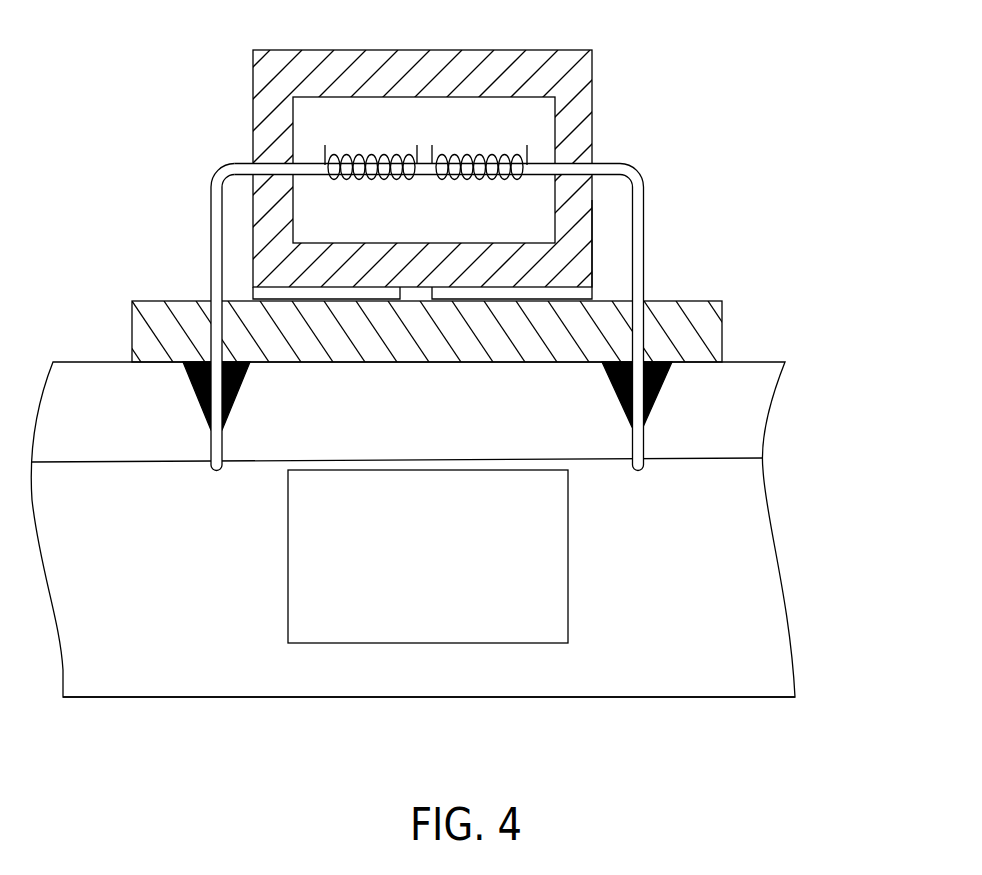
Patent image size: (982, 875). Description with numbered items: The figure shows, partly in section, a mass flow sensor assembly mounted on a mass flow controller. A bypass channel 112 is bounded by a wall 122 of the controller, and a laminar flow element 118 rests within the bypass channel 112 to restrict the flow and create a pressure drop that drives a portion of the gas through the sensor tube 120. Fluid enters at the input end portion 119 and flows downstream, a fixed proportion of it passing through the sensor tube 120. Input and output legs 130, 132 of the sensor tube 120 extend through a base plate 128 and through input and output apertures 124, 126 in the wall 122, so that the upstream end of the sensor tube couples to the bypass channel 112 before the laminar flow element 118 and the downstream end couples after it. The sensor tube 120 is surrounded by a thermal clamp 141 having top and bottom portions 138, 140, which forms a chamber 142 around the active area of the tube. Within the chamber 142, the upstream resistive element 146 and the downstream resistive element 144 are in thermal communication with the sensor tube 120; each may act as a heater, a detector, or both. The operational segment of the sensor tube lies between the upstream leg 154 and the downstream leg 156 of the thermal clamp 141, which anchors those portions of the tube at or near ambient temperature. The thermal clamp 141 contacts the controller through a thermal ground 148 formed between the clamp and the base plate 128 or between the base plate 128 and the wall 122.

The bypass channel 112 is at (722, 557).
The laminar flow element 118 is at (447, 569).
The input end portion 119 is at (153, 512).
The sensor tube 120 is at (426, 90).
The wall 122 is at (760, 378).
The input aperture 124 is at (633, 463).
The output aperture 126 is at (210, 464).
The base plate 128 is at (714, 303).
The input leg 130 is at (430, 287).
The output leg 132 is at (211, 231).
The top portion 138 is at (527, 66).
The bottom portion 140 is at (588, 259).
The thermal clamp 141 is at (610, 192).
The chamber 142 is at (402, 120).
The downstream resistive element 144 is at (357, 162).
The upstream resistive element 146 is at (482, 162).
The thermal ground 148 is at (403, 299).
The upstream leg 154 is at (594, 162).
The downstream leg 156 is at (277, 168).